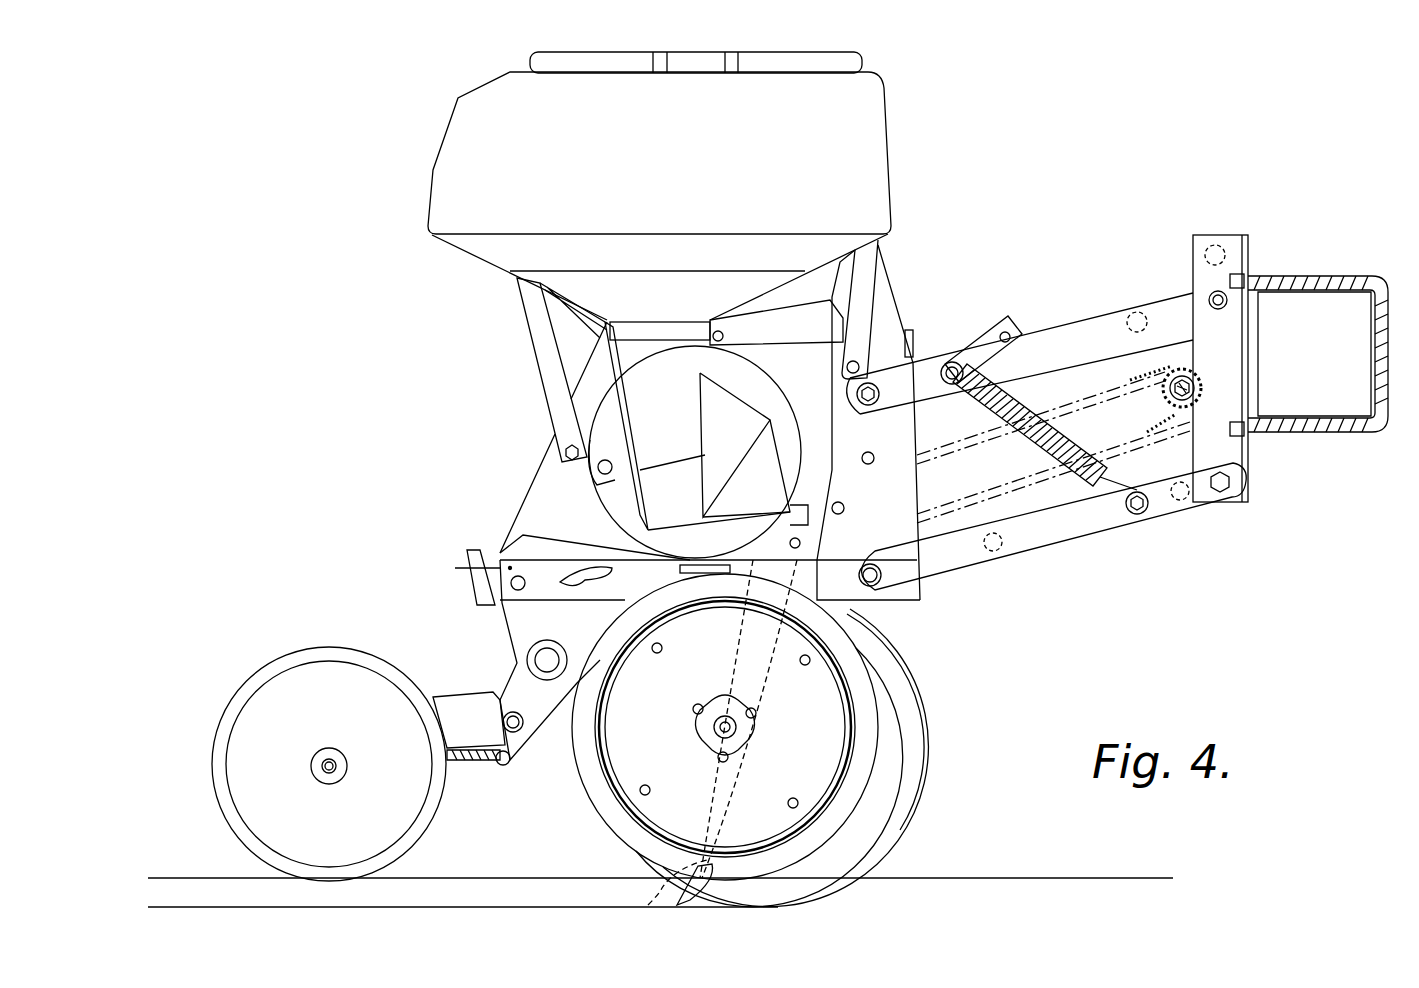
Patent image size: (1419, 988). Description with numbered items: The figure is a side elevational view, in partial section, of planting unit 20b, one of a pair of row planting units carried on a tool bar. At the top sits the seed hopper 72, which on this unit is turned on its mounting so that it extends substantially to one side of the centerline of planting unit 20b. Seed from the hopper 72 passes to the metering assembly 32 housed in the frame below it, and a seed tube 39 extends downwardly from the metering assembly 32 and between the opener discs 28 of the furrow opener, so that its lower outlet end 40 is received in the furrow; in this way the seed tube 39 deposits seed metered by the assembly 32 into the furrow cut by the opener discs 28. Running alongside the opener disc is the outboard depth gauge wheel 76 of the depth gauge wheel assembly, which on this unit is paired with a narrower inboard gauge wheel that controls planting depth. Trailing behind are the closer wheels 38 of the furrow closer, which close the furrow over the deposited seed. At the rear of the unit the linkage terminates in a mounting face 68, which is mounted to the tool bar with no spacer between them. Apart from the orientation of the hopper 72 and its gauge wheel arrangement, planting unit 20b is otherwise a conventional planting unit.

The planting unit 20b is at (952, 230).
The opener discs 28 is at (888, 842).
The metering assembly 32 is at (760, 390).
The closer wheels 38 is at (280, 670).
The seed tube 39 is at (740, 641).
The lower outlet end 40 is at (648, 905).
The mounting face 68 is at (1250, 477).
The seed hopper 72 is at (866, 121).
The outboard depth gauge wheel 76 is at (870, 717).